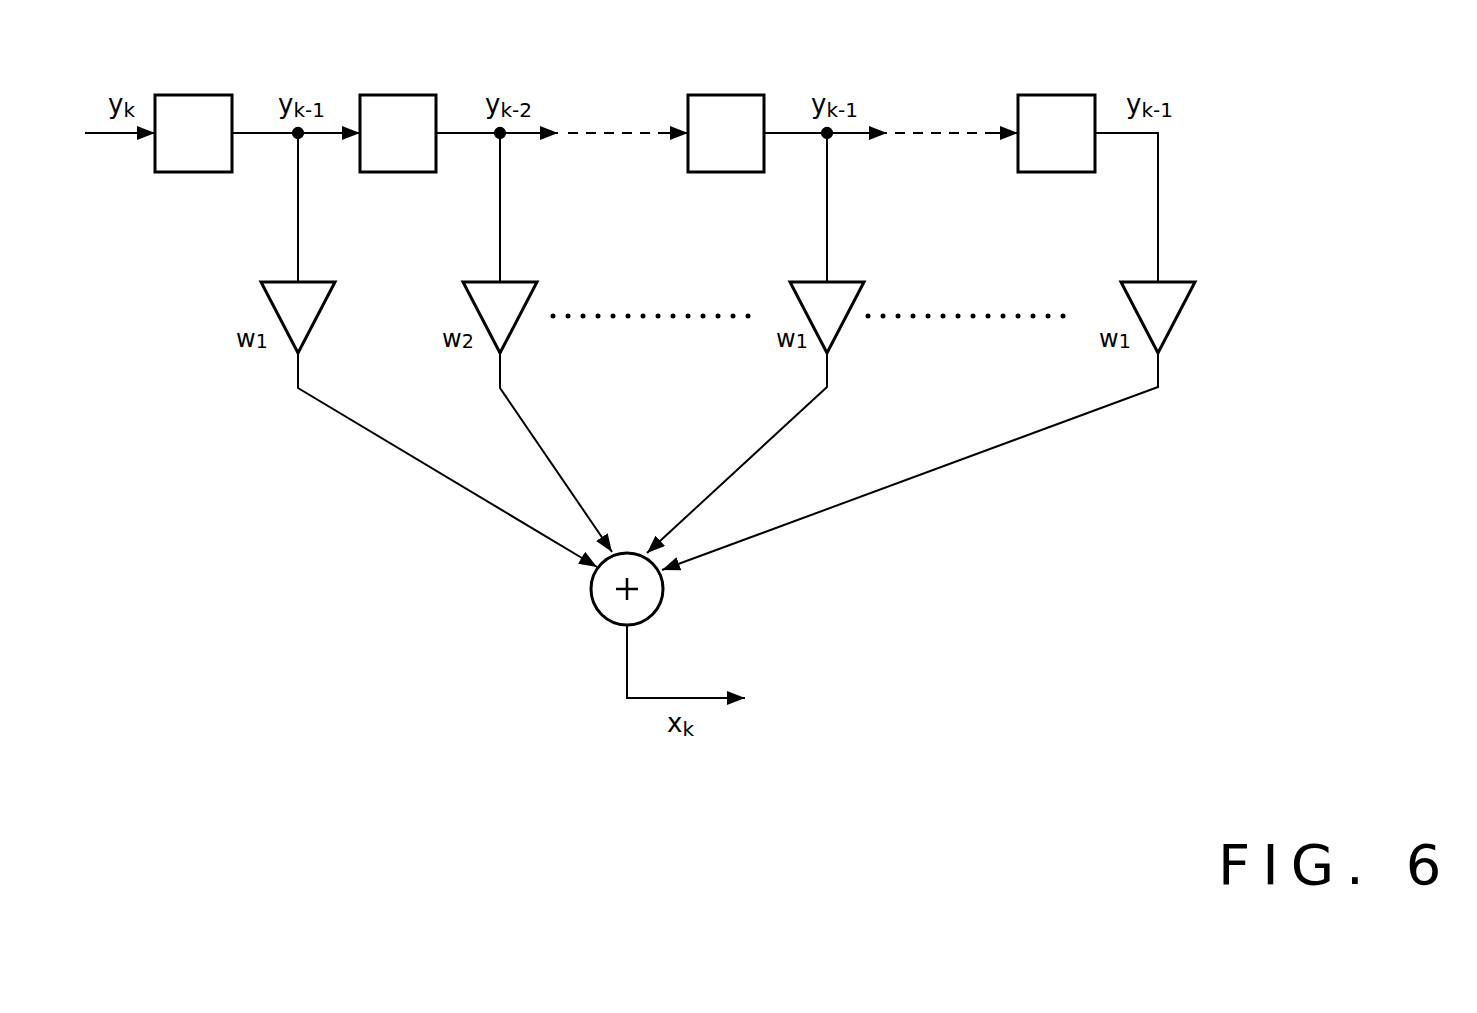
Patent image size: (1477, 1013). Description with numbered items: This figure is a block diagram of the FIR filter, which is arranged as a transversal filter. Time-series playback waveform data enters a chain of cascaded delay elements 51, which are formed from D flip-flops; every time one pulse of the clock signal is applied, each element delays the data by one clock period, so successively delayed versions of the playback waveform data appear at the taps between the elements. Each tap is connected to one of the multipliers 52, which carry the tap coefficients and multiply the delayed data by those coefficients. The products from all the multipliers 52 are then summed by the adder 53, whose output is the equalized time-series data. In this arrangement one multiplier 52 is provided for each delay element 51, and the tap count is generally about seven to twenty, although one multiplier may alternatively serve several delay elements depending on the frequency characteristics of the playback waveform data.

The delay elements 51 is at (625, 93).
The multipliers 52 is at (737, 279).
The adder 53 is at (665, 598).